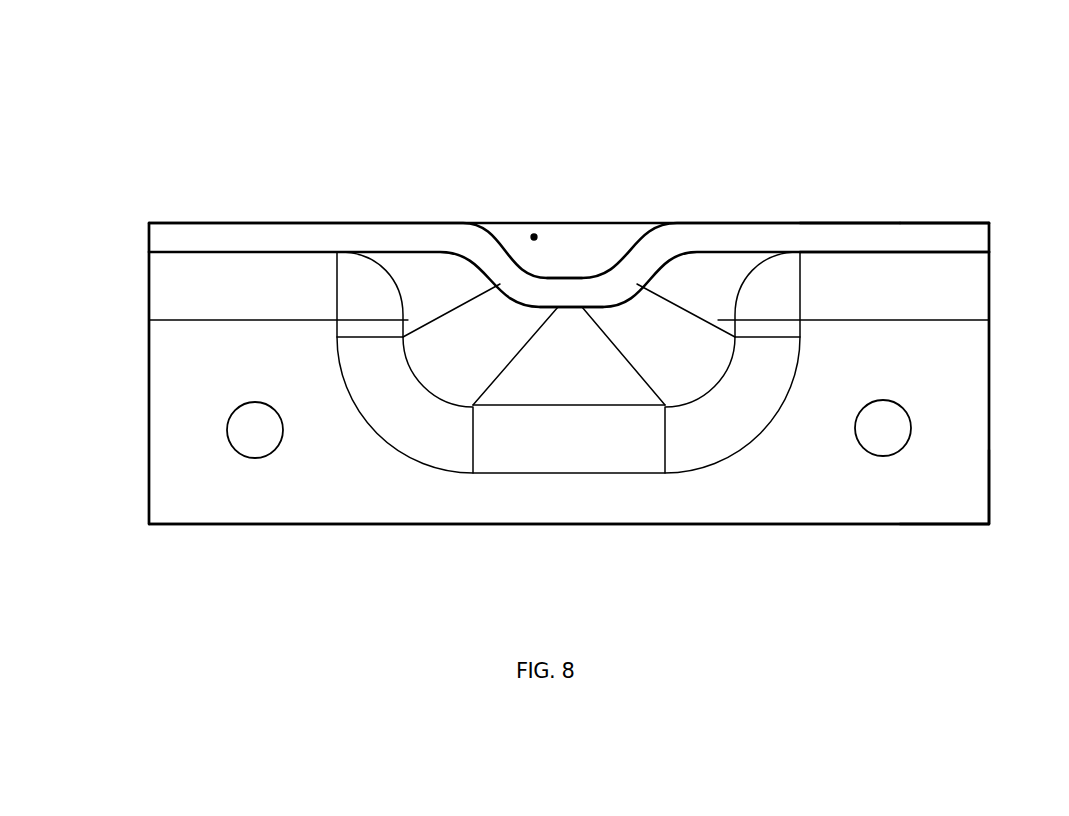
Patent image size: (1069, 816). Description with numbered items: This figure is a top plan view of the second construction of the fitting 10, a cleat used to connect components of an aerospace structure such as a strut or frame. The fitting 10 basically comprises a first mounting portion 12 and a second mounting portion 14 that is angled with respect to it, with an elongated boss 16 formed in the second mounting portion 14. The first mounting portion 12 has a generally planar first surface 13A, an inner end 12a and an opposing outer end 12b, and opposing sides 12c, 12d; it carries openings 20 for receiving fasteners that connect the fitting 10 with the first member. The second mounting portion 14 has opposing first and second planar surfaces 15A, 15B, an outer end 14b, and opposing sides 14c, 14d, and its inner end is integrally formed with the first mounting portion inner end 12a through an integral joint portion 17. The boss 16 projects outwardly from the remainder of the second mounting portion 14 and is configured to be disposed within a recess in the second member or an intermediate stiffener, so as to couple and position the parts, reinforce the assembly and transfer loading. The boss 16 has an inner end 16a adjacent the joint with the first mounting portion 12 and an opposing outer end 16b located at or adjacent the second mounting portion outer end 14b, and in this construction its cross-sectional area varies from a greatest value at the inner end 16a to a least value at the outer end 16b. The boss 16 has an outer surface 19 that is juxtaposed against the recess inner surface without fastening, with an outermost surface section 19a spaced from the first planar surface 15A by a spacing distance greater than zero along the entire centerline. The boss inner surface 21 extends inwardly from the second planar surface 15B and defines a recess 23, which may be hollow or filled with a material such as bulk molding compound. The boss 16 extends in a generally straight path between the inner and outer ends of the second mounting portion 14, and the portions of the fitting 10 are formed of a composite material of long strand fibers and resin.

The fitting 10 is at (198, 103).
The first mounting portion 12 is at (948, 536).
The first mounting portion inner end 12a is at (265, 320).
The first mounting portion outer end 12b is at (692, 525).
The first mounting portion side 12c is at (990, 377).
The first mounting portion side 12d is at (148, 430).
The first planar surface 13A is at (975, 472).
The second mounting portion 14 is at (286, 208).
The second mounting portion outer end 14b is at (938, 238).
The second mounting portion side 14c is at (990, 237).
The second mounting portion side 14d is at (148, 235).
The first planar surface 15A is at (912, 253).
The second planar surface 15B is at (855, 223).
The elongated boss 16 is at (450, 380).
The boss inner end 16a is at (623, 407).
The boss outer end 16b is at (588, 290).
The integral joint portion 17 is at (165, 289).
The boss outer surface 19 is at (694, 370).
The outermost surface section 19a is at (570, 387).
The opening 20 is at (244, 451).
The boss inner surface 21 is at (569, 268).
The recess 23 is at (534, 235).